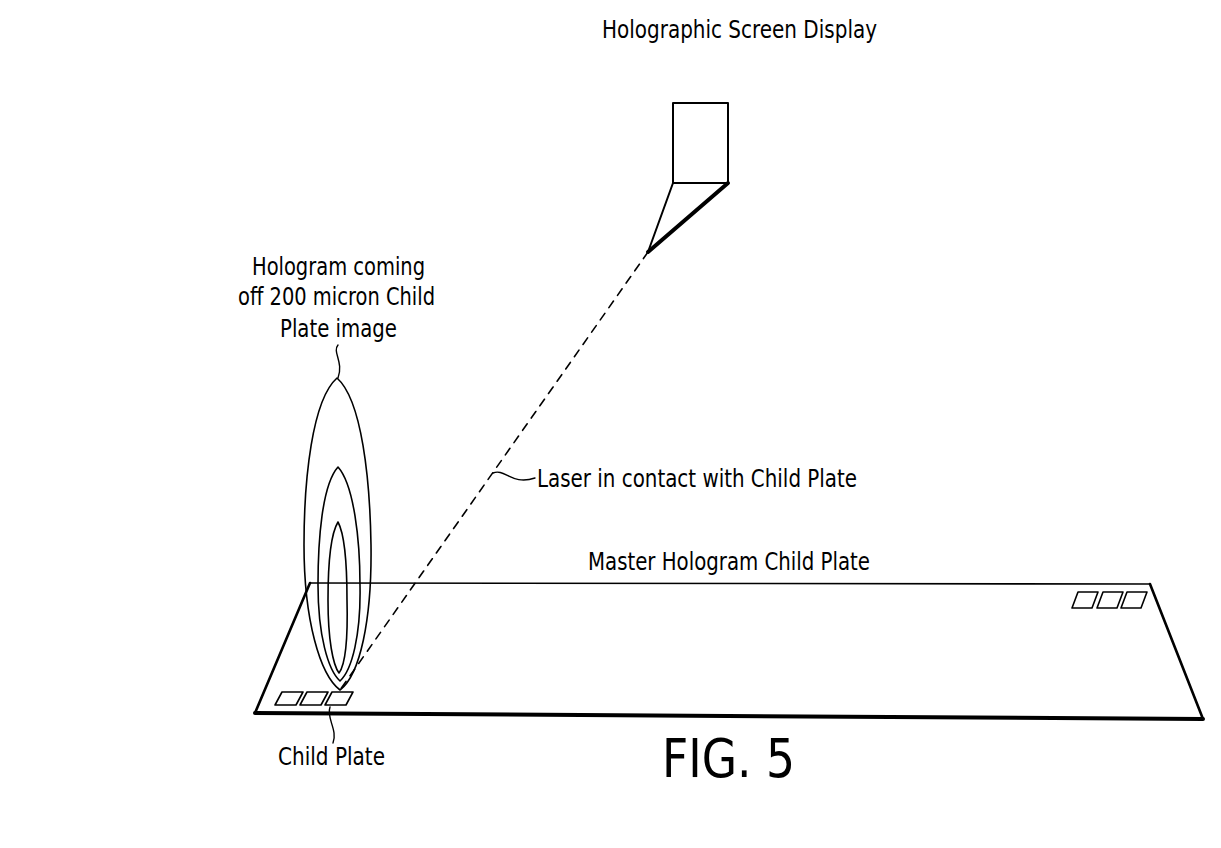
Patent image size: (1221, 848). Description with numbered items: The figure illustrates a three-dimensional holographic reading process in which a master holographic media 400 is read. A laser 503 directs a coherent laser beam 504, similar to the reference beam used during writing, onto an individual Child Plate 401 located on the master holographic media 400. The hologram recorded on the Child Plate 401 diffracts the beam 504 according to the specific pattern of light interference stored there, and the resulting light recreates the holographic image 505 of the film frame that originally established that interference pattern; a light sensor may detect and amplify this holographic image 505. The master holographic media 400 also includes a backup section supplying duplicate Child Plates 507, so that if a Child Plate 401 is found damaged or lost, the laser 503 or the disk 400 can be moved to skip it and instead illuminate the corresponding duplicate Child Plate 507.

The master holographic media 400 is at (1083, 722).
The Child Plate 401 is at (283, 708).
The laser 503 is at (730, 140).
The coherent laser beam 504 is at (580, 347).
The holographic image 505 is at (368, 440).
The duplicate Child Plates 507 is at (1105, 591).